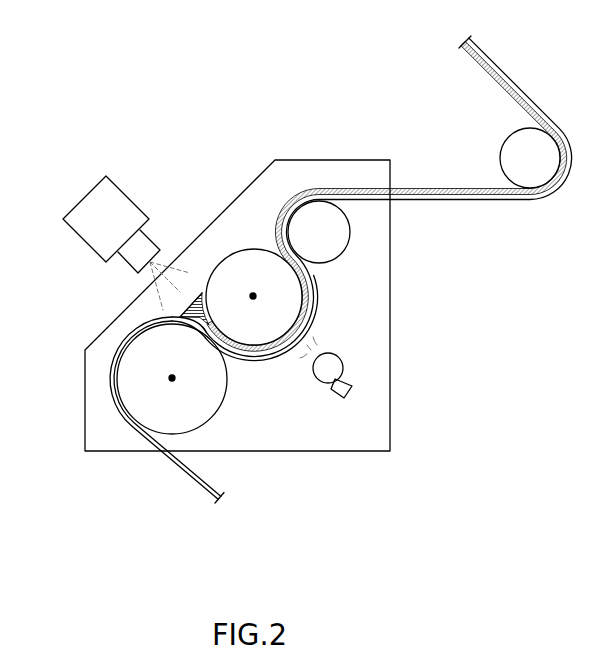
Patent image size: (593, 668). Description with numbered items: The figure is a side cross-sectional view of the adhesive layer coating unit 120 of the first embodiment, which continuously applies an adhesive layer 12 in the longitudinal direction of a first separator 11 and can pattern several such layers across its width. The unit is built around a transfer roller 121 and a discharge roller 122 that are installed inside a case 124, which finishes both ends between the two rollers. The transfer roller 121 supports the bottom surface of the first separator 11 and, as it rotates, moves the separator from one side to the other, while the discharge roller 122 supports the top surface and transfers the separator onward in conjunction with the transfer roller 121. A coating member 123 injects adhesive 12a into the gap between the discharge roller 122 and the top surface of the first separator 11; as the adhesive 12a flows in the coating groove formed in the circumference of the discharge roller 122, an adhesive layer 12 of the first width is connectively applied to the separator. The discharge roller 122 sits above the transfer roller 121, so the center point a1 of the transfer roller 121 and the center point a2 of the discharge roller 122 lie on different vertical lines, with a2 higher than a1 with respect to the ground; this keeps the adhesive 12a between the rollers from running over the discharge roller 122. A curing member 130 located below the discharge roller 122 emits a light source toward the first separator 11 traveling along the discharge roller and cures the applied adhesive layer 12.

The first separator 11 is at (197, 492).
The adhesive layer 12 is at (452, 188).
The adhesive 12a is at (202, 293).
The adhesive layer coating unit 120 is at (384, 90).
The transfer roller 121 is at (138, 378).
The discharge roller 122 is at (233, 263).
The coating member 123 is at (85, 195).
The case 124 is at (332, 160).
The curing member 130 is at (346, 377).
The center point of the transfer roller a1 is at (187, 377).
The center point of the discharge roller a2 is at (268, 293).